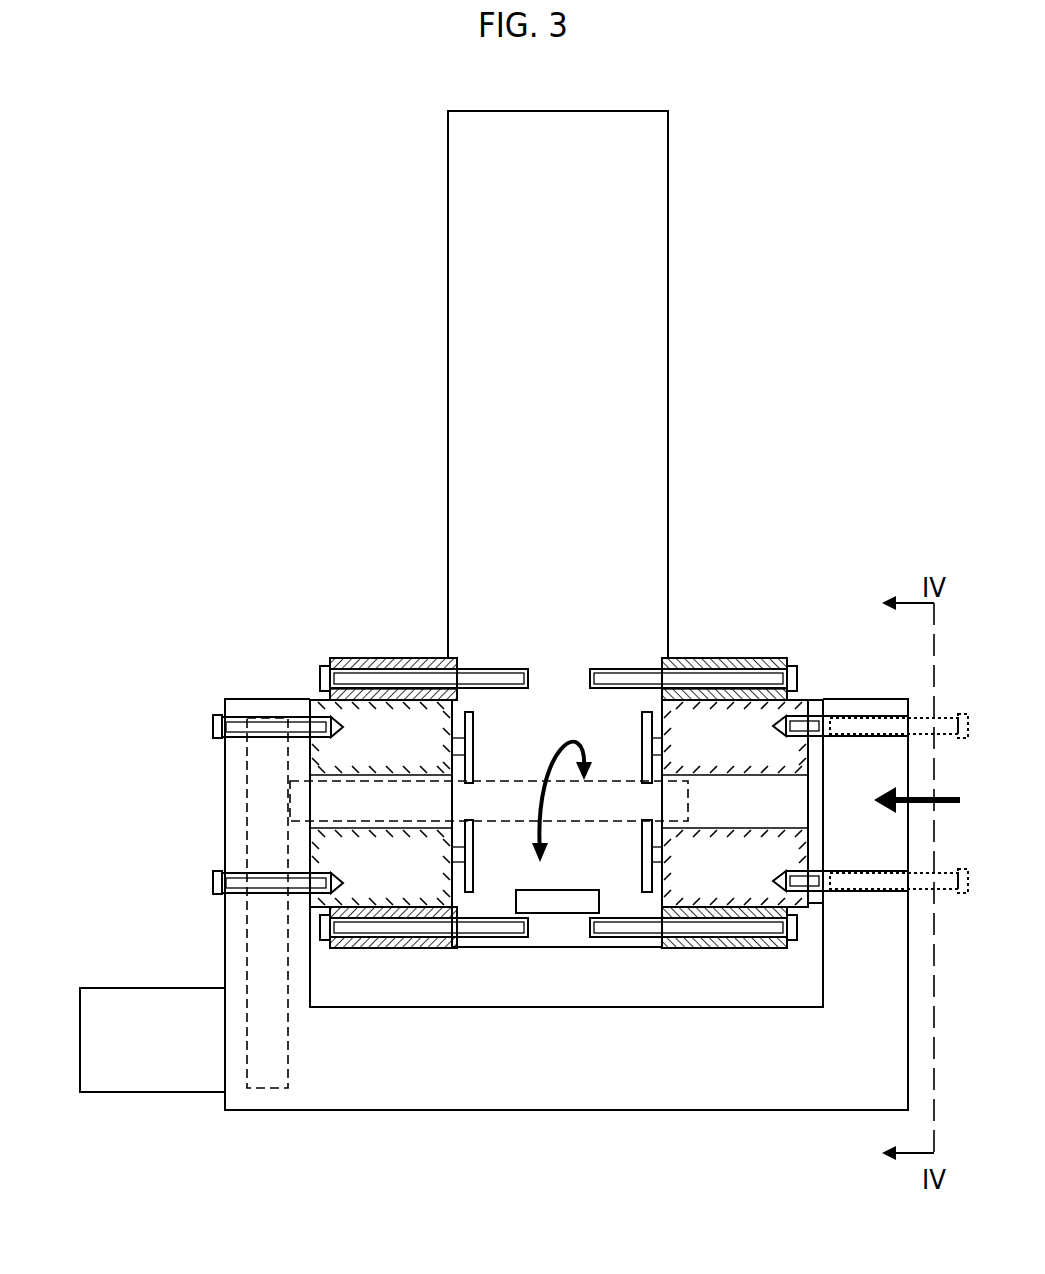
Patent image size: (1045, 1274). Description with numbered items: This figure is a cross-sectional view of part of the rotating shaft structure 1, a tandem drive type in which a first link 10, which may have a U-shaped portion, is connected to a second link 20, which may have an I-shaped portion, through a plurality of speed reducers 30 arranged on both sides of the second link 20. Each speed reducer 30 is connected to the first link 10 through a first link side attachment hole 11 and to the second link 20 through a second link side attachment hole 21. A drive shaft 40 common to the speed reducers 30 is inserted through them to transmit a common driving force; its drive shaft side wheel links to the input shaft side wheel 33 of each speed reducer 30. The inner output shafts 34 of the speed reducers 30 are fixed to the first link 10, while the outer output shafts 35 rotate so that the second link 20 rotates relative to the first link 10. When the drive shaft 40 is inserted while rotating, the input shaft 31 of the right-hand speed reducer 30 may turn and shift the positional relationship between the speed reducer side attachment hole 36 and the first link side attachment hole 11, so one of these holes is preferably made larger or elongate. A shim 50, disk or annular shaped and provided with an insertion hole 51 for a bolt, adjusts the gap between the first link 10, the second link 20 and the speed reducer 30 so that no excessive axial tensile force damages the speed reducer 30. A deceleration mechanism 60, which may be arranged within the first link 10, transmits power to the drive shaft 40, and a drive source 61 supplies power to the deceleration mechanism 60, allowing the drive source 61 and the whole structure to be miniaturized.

The rotating shaft structure 1 is at (272, 288).
The first link 10 is at (580, 1112).
The first link side attachment hole 11 is at (238, 716).
The second link 20 is at (643, 247).
The second link side attachment hole 21 is at (478, 668).
The speed reducer 30 is at (386, 650).
The input shaft 31 is at (654, 856).
The input shaft side wheel 33 is at (475, 754).
The inner output shaft 34 is at (712, 950).
The outer output shaft 35 is at (393, 948).
The speed reducer side attachment hole 36 is at (340, 878).
The drive shaft 40 is at (570, 780).
The shim 50 is at (811, 907).
The insertion hole 51 is at (815, 698).
The deceleration mechanism 60 is at (266, 810).
The drive source 61 is at (162, 986).